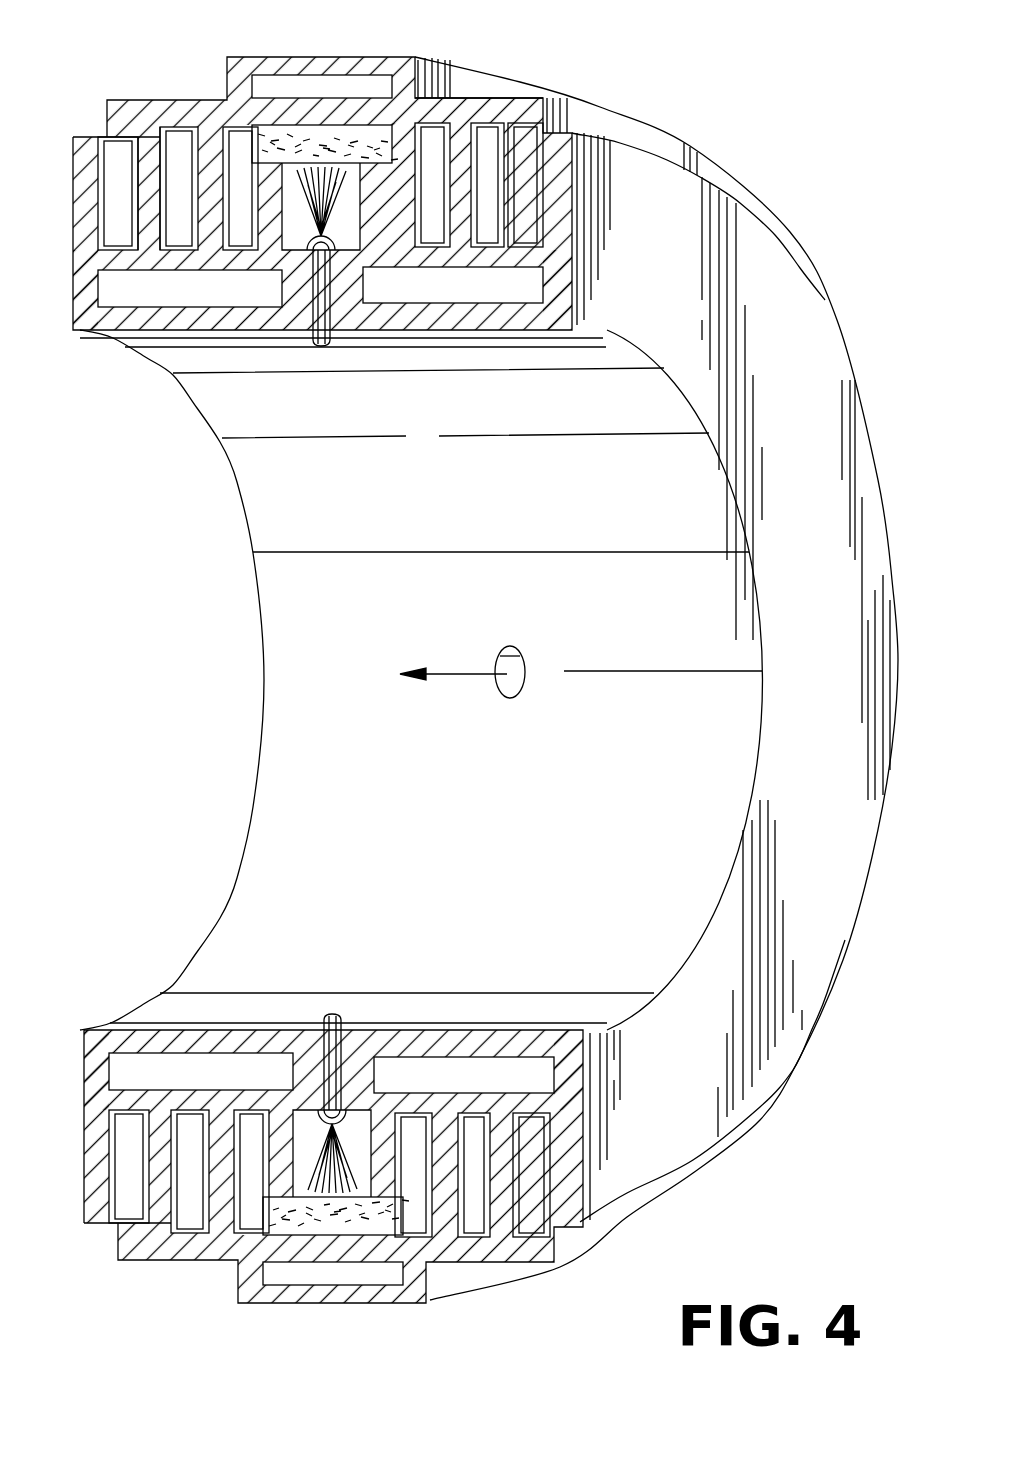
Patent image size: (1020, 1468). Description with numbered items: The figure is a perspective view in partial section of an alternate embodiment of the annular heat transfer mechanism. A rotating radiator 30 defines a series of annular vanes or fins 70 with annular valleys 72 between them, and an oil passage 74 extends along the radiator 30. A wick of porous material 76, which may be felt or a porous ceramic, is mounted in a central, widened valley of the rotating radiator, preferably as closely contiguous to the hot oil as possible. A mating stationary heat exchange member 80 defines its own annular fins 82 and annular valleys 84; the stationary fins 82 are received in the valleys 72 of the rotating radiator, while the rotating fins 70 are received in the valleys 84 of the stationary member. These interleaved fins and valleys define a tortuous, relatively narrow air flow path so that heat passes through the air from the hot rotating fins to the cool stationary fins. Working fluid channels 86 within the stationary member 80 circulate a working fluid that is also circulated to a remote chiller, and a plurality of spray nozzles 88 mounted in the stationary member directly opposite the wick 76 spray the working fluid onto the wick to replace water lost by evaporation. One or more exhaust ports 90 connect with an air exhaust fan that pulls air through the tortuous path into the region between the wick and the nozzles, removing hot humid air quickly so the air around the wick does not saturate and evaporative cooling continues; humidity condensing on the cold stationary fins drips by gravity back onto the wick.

The rotating radiator 30 is at (462, 98).
The annular fins 70 is at (177, 177).
The annular valleys 72 is at (157, 133).
The oil passage 74 is at (313, 80).
The wick of porous material 76 is at (362, 142).
The stationary heat exchange member 80 is at (466, 332).
The annular fins 82 is at (540, 92).
The annular valleys 84 is at (118, 247).
The working fluid channels 86 is at (527, 285).
The spray nozzles 88 is at (306, 240).
The exhaust ports 90 is at (508, 698).